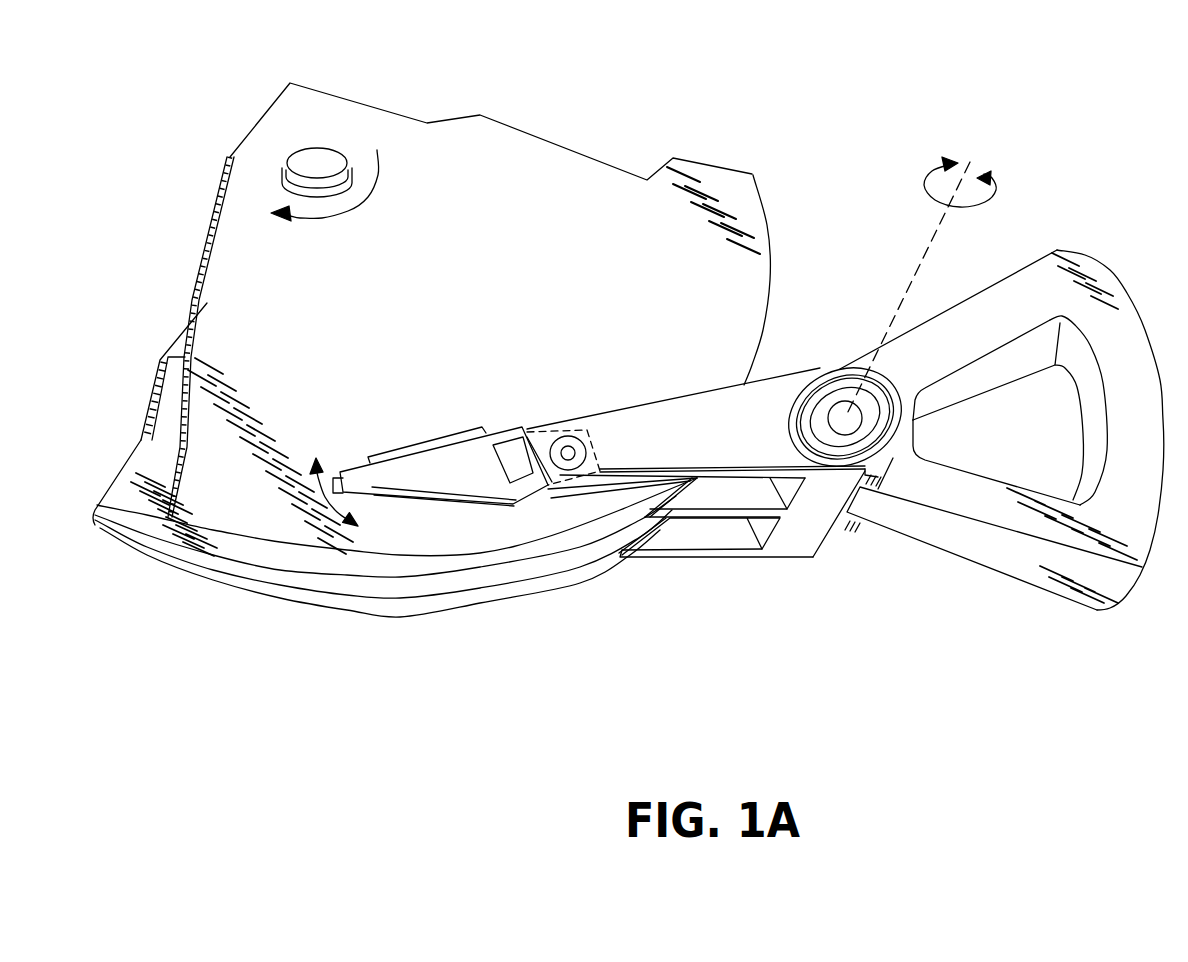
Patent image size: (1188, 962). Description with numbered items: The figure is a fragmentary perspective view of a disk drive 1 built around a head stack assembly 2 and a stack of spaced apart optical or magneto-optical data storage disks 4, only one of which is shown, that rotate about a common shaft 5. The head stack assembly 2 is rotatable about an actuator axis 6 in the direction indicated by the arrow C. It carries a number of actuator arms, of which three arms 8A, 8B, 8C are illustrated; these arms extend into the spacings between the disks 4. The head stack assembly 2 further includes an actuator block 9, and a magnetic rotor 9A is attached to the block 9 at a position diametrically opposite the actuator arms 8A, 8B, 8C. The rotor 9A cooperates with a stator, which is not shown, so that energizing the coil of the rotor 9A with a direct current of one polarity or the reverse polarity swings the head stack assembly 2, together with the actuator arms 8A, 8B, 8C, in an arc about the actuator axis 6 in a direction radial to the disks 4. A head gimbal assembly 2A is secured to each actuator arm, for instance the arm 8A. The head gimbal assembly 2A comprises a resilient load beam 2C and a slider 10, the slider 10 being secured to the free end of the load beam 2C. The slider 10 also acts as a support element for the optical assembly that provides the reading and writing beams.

The disk drive 1 is at (591, 44).
The head stack assembly 2 is at (737, 408).
The head gimbal assembly 2A is at (436, 420).
The load beam 2C is at (468, 483).
The data storage disks 4 is at (485, 222).
The common shaft 5 is at (300, 160).
The actuator axis 6 is at (940, 235).
The actuator arm 8A is at (703, 392).
The actuator arm 8B is at (697, 512).
The actuator arm 8C is at (727, 550).
The actuator block 9 is at (818, 542).
The magnetic rotor 9A is at (988, 560).
The slider 10 is at (330, 490).
The direction of rotation arrow C is at (951, 169).